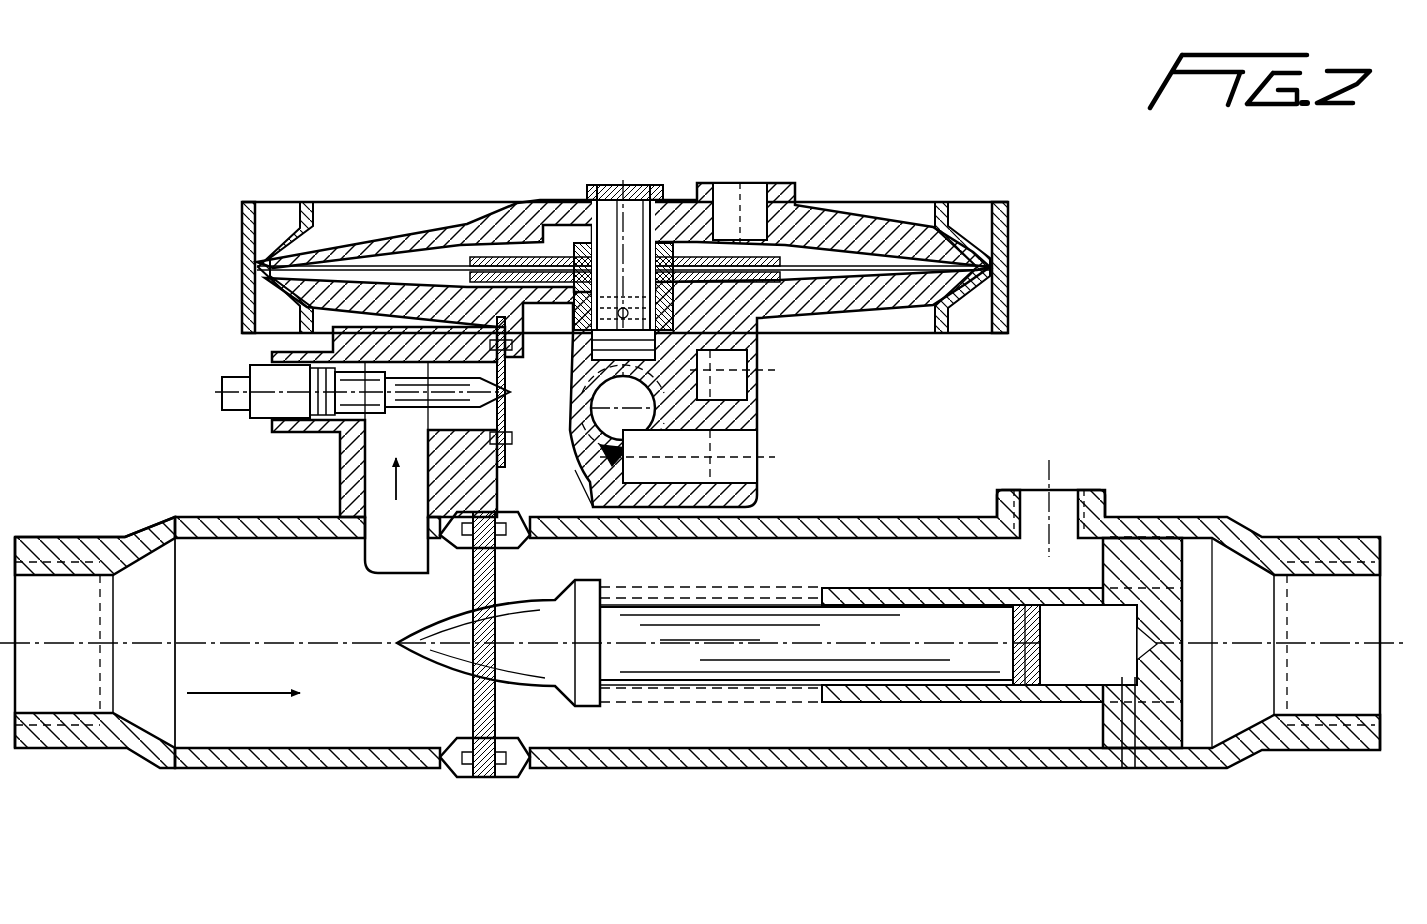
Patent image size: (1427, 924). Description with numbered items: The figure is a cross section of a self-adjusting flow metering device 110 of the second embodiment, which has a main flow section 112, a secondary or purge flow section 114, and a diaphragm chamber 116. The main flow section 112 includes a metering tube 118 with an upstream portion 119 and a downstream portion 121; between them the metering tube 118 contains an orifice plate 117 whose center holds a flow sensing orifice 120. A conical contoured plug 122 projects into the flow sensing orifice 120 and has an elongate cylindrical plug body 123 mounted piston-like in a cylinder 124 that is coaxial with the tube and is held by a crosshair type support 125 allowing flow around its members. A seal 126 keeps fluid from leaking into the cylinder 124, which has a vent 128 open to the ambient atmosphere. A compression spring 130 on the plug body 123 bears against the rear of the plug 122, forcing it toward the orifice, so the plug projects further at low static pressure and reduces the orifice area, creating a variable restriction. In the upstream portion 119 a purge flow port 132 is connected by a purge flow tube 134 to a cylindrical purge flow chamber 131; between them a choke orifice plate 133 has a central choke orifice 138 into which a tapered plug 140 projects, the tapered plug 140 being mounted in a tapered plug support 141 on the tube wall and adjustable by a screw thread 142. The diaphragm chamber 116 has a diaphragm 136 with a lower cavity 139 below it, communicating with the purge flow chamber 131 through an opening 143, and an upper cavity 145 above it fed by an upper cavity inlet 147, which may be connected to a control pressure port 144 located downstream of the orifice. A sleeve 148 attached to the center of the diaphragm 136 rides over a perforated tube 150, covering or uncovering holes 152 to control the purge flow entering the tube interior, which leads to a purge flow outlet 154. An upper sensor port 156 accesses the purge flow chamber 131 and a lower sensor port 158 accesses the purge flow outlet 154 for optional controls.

The self-adjusting flow metering device 110 is at (172, 106).
The main flow section 112 is at (455, 790).
The purge flow section 114 is at (320, 458).
The diaphragm chamber 116 is at (840, 130).
The orifice plate 117 is at (543, 770).
The metering tube 118 is at (305, 770).
The upstream portion 119 is at (145, 712).
The flow sensing orifice 120 is at (462, 660).
The downstream portion 121 is at (1060, 742).
The conical contoured plug 122 is at (565, 700).
The plug body 123 is at (795, 700).
The cylinder 124 is at (918, 725).
The crosshair type support 125 is at (1228, 758).
The seal 126 is at (1023, 690).
The vent 128 is at (1132, 680).
The compression spring 130 is at (745, 705).
The purge flow chamber 131 is at (553, 389).
The purge flow port 132 is at (375, 555).
The choke orifice plate 133 is at (505, 540).
The purge flow tube 134 is at (330, 442).
The diaphragm 136 is at (866, 262).
The choke orifice 138 is at (585, 515).
The lower cavity 139 is at (748, 275).
The tapered plug 140 is at (417, 410).
The tapered plug support 141 is at (300, 345).
The screw thread 142 is at (355, 368).
The opening 143 is at (668, 250).
The control pressure port 144 is at (1050, 482).
The upper cavity 145 is at (510, 203).
The upper cavity inlet 147 is at (722, 190).
The sleeve 148 is at (757, 320).
The perforated tube 150 is at (640, 205).
The holes 152 is at (545, 257).
The purge flow outlet 154 is at (755, 390).
The upper sensor port 156 is at (765, 382).
The lower sensor port 158 is at (757, 470).